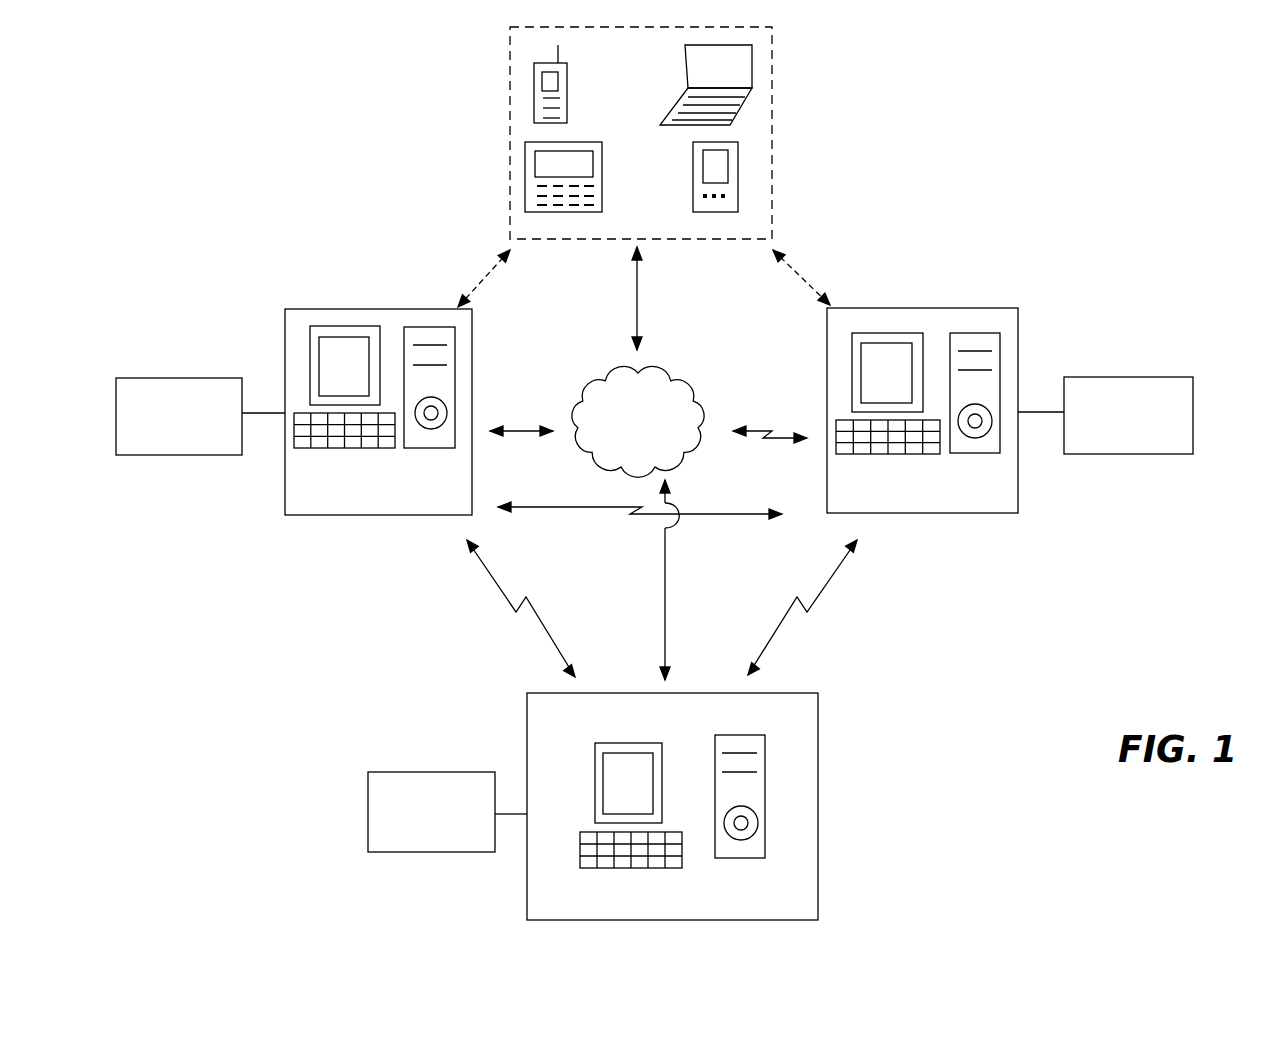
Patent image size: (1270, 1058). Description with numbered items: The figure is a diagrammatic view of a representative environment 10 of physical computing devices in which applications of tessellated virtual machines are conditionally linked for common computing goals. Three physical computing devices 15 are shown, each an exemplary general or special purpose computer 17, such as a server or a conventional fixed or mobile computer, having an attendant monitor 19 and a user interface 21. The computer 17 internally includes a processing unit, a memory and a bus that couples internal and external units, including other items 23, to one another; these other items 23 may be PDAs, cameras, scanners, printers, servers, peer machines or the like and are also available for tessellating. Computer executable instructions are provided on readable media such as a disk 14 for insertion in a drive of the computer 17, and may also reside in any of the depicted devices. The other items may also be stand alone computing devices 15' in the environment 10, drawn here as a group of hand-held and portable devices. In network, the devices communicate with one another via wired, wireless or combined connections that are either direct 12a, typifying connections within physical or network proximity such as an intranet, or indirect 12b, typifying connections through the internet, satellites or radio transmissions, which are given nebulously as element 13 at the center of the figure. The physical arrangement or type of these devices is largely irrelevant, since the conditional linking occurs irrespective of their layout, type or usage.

The representative environment 10 is at (149, 159).
The direct connection 12a is at (480, 283).
The indirect connection 12b is at (637, 298).
The indirect connection element 13 is at (697, 375).
The disk 14 is at (447, 403).
The physical computing device 15 is at (651, 591).
The stand alone computing device 15' is at (677, 133).
The computer 17 is at (430, 452).
The monitor 19 is at (309, 353).
The user interface 21 is at (313, 450).
The other 23 is at (173, 377).